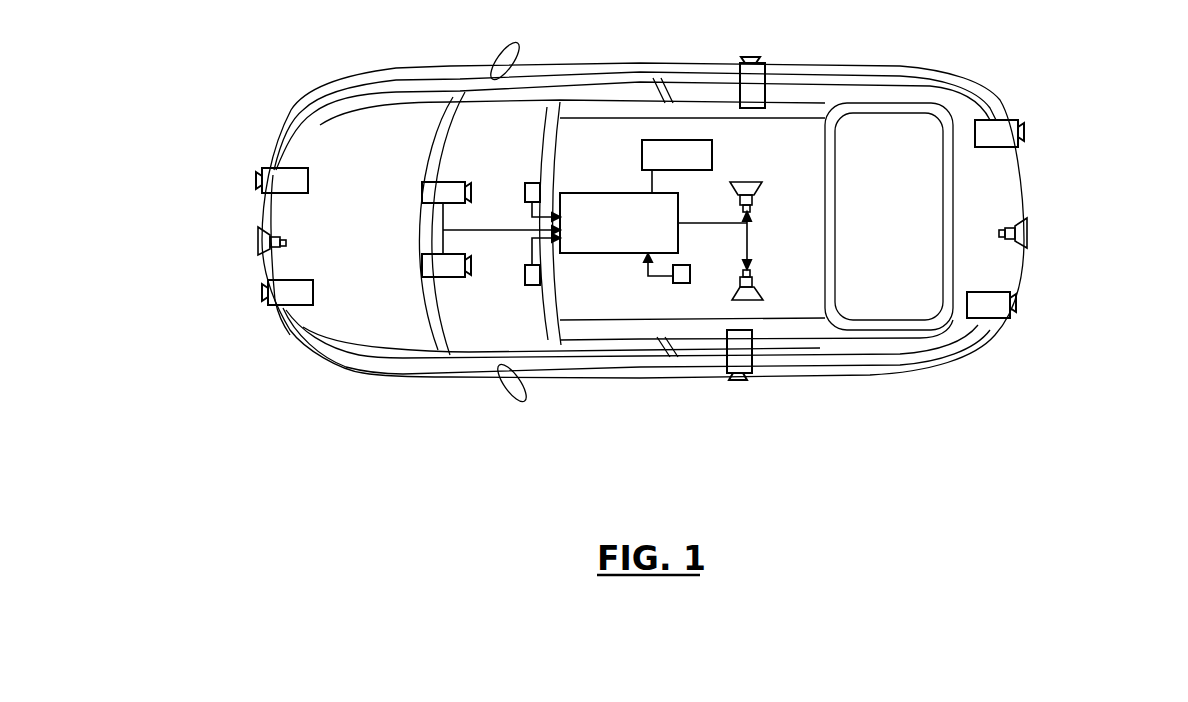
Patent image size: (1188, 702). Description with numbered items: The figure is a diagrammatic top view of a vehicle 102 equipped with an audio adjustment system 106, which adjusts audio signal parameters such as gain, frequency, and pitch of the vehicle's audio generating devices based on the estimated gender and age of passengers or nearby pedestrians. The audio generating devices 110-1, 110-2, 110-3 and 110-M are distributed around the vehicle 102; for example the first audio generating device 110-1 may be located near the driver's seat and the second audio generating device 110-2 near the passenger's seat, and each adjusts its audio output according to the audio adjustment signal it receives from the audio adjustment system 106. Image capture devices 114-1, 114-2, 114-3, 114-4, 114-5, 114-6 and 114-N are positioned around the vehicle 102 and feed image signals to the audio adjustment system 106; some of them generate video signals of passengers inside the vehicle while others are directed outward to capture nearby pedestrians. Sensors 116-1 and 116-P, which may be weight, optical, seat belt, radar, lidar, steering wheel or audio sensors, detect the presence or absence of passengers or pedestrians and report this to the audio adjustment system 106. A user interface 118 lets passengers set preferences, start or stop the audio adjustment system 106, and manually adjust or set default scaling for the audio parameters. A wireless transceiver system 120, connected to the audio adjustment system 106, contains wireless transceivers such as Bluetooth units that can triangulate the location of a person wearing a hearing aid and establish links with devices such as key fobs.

The vehicle 102 is at (277, 161).
The audio adjustment system 106 is at (630, 192).
The first audio generating device 110-1 is at (763, 187).
The second audio generating device 110-2 is at (1028, 233).
The audio generating device 110-3 is at (288, 243).
The audio generating device 110-M is at (764, 294).
The image capture device 114-1 is at (422, 190).
The image capture device 114-2 is at (272, 207).
The image capture device 114-3 is at (727, 348).
The image capture device 114-4 is at (987, 319).
The image capture device 114-5 is at (741, 66).
The image capture device 114-6 is at (998, 148).
The image capture device 114-N is at (422, 266).
The sensor 116-1 is at (541, 191).
The sensor 116-P is at (541, 271).
The user interface 118 is at (673, 285).
The wireless transceiver system (WTS) 120 is at (713, 155).